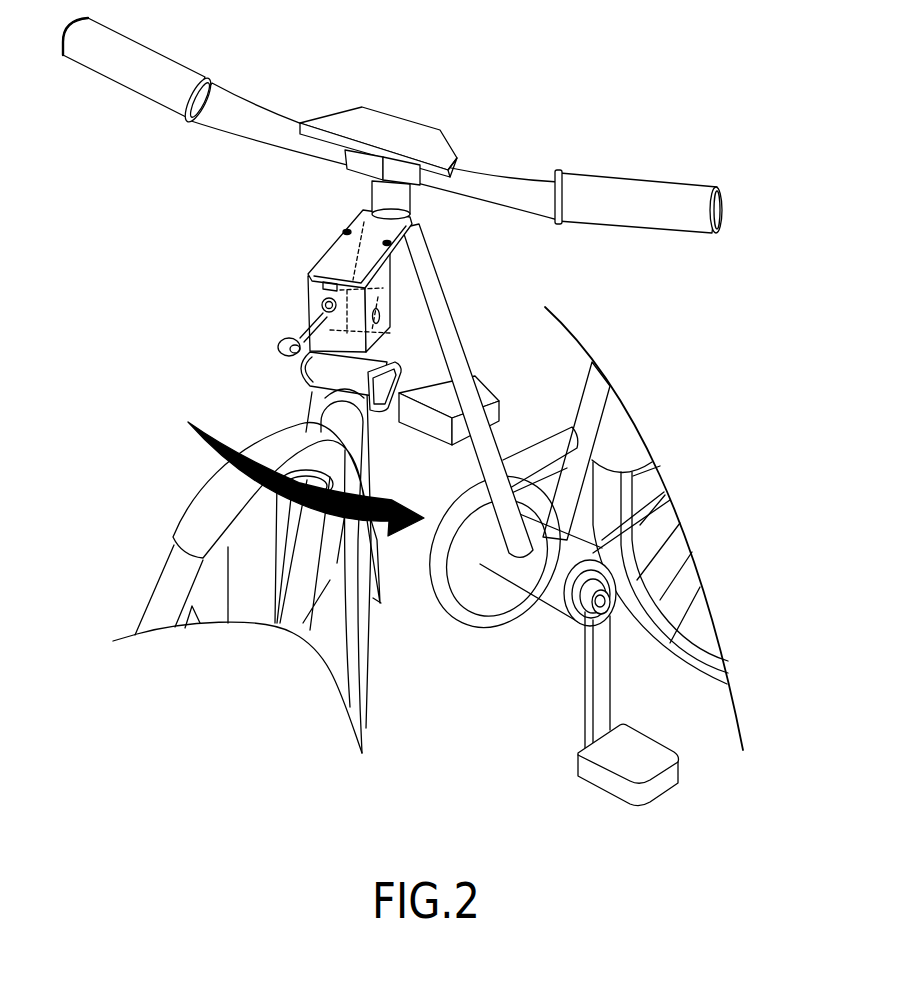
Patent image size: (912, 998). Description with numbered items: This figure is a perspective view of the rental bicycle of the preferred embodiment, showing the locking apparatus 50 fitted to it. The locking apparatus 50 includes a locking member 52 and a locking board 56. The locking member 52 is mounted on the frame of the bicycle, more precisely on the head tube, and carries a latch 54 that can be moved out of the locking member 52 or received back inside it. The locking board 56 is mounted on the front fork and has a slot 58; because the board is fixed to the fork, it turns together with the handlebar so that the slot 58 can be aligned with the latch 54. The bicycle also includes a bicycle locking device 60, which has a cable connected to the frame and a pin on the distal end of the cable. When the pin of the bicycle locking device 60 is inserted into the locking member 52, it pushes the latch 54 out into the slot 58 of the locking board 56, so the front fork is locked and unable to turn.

The locking apparatus 50 is at (347, 293).
The locking member 52 is at (330, 258).
The latch 54 is at (378, 336).
The locking board 56 is at (378, 340).
The slot 58 is at (388, 374).
The bicycle locking device 60 is at (318, 309).